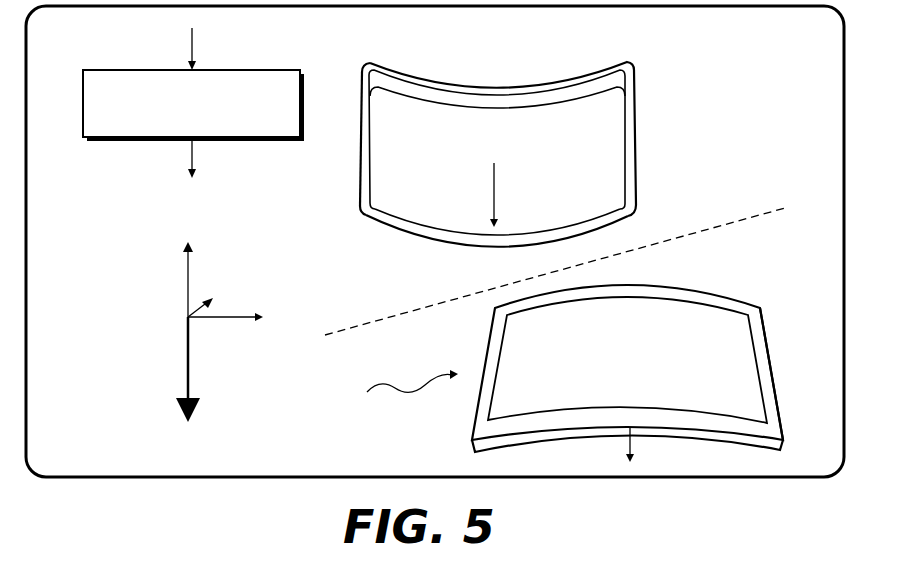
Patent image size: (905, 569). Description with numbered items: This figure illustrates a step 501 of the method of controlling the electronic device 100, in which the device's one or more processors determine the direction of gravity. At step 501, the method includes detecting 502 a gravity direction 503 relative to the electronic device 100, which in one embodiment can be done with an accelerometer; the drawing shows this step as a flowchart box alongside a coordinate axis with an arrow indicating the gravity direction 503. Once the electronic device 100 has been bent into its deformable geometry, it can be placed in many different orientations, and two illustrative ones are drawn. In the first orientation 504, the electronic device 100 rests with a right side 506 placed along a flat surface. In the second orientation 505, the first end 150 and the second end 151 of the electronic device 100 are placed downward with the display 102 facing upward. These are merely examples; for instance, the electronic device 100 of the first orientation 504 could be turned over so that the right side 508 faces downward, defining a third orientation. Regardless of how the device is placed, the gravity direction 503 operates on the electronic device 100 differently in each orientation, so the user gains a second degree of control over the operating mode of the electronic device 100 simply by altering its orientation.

The electronic device 100 is at (563, 255).
The display 102 is at (522, 360).
The first end 150 is at (477, 388).
The second end 151 is at (775, 348).
The step 501 is at (82, 88).
The detecting 502 is at (145, 82).
The gravity direction 503 is at (190, 363).
The first orientation 504 is at (342, 165).
The second orientation 505 is at (404, 393).
The right side 506 is at (422, 244).
The right side 508 is at (475, 68).